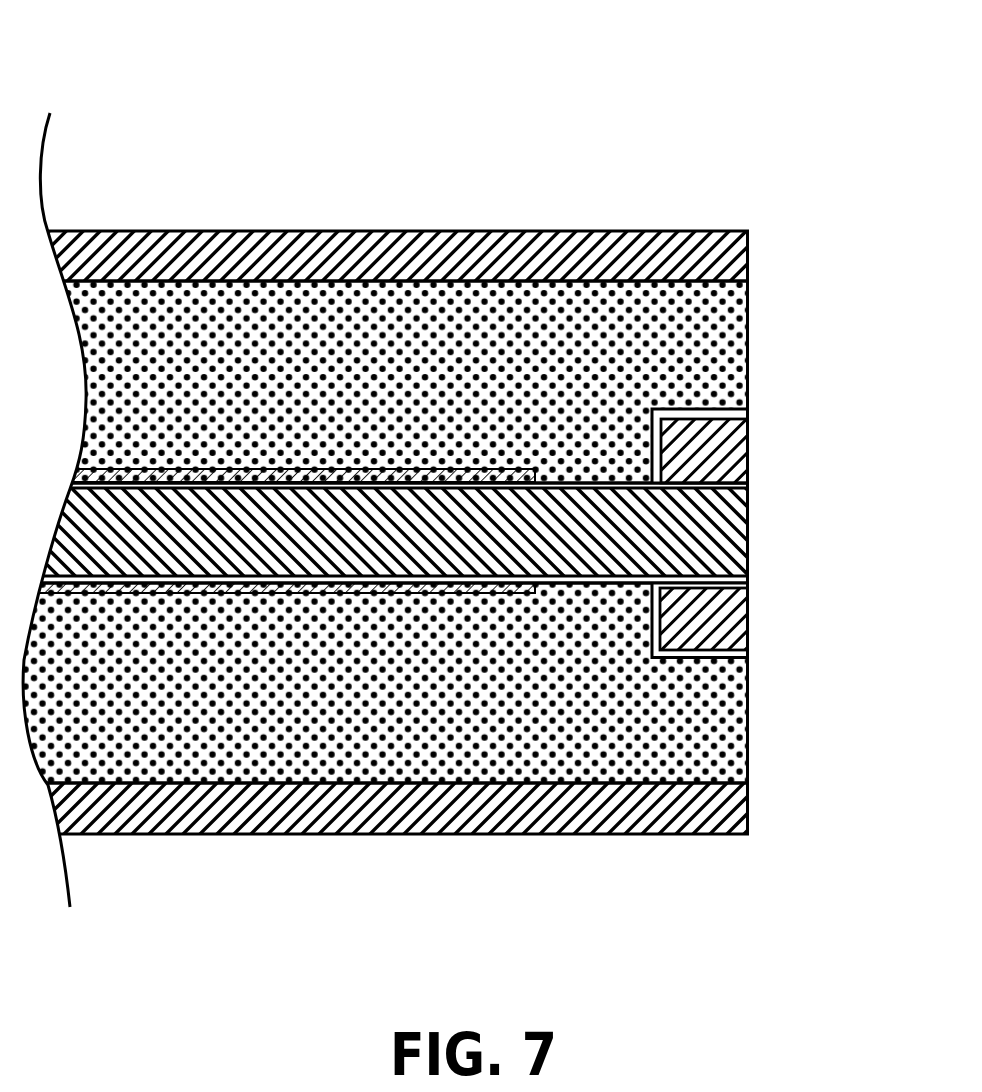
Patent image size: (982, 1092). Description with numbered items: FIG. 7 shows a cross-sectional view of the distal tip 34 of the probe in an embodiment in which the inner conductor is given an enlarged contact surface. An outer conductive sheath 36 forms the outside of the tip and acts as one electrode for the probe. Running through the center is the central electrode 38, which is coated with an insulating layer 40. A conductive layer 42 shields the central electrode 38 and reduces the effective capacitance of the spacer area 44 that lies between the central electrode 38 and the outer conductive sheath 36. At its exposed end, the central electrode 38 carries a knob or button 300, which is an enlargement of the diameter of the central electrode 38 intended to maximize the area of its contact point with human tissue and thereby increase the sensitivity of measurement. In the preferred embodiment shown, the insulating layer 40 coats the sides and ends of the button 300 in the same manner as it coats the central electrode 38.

The distal tip 34 is at (303, 105).
The outer conductive sheath 36 is at (633, 240).
The central electrode 38 is at (750, 542).
The insulating layer 40 is at (748, 411).
The conductive layer 42 is at (537, 472).
The spacer area 44 is at (727, 338).
The button 300 is at (750, 442).